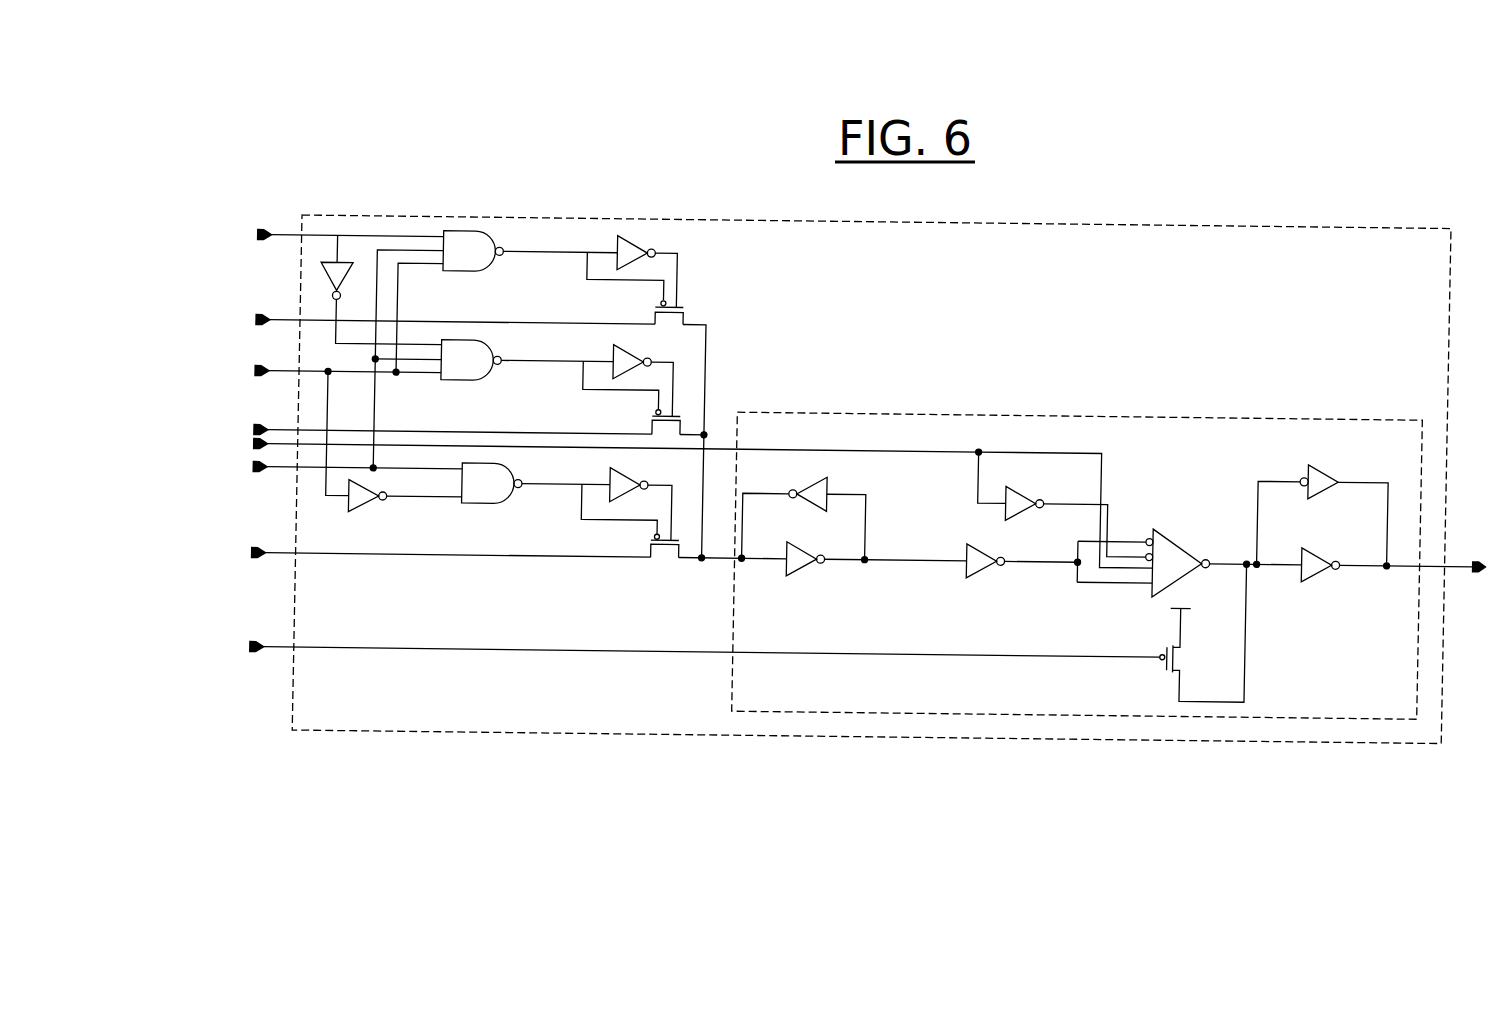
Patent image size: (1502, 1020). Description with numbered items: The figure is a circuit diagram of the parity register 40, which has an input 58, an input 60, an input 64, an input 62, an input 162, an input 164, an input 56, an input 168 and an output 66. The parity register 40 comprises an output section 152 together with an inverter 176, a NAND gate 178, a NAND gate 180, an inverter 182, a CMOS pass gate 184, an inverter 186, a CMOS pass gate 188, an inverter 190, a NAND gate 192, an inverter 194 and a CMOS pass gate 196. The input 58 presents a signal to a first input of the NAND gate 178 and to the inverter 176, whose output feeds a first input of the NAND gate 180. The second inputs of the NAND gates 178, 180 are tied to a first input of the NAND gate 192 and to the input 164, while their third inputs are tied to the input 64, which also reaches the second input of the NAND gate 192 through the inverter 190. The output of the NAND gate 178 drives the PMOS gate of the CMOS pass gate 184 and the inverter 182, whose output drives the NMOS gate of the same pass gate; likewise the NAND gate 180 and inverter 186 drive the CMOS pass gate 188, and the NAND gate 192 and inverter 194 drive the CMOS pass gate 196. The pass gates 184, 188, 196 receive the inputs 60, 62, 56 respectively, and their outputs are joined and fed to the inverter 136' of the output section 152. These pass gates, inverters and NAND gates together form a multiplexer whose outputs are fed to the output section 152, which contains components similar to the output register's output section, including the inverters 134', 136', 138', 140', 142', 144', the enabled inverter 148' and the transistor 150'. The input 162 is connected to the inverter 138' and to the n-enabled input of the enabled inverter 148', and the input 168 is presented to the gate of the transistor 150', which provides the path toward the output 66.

The parity register 40 is at (366, 74).
The output section 152 is at (792, 406).
The input 58 is at (300, 232).
The input 60 is at (300, 318).
The input 64 is at (300, 370).
The input 62 is at (300, 429).
The input 162 is at (293, 446).
The input 164 is at (296, 470).
The input 56 is at (298, 551).
The input 168 is at (292, 645).
The output 66 is at (1450, 553).
The inverter 176 is at (345, 285).
The NAND gate 178 is at (458, 274).
The NAND gate 180 is at (463, 381).
The inverter 182 is at (641, 239).
The CMOS pass gate 184 is at (690, 308).
The inverter 186 is at (638, 344).
The CMOS pass gate 188 is at (651, 421).
The inverter 190 is at (366, 512).
The NAND gate 192 is at (483, 508).
The inverter 194 is at (625, 463).
The CMOS pass gate 196 is at (670, 559).
The inverter 134' is at (812, 508).
The inverter 136' is at (876, 571).
The inverter 138' is at (1061, 503).
The inverter 140' is at (1023, 575).
The inverter 142' is at (1323, 503).
The inverter 144' is at (1325, 551).
The enabled inverter 148' is at (1140, 525).
The transistor 150' is at (1203, 632).